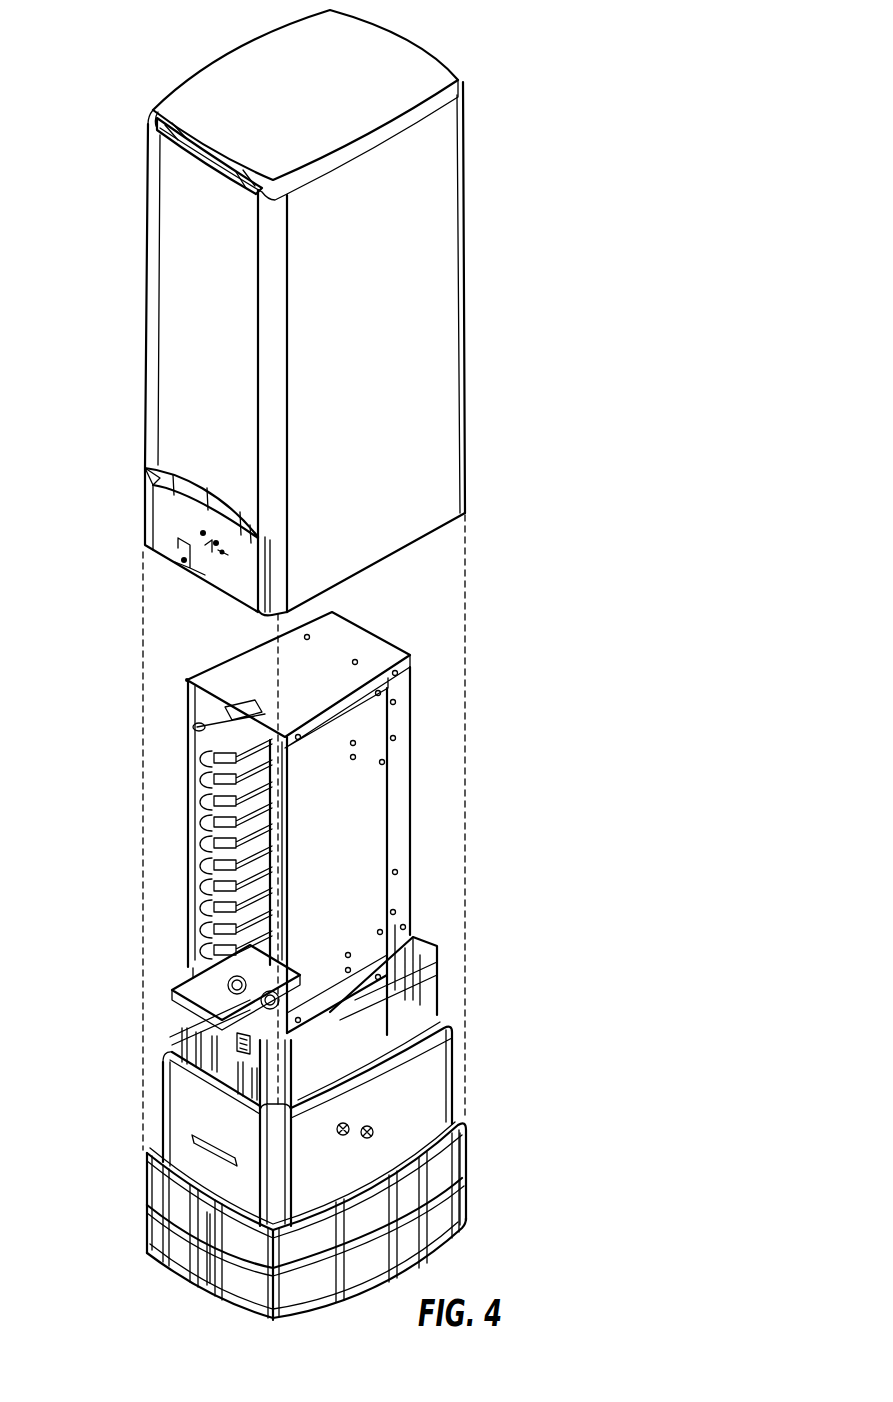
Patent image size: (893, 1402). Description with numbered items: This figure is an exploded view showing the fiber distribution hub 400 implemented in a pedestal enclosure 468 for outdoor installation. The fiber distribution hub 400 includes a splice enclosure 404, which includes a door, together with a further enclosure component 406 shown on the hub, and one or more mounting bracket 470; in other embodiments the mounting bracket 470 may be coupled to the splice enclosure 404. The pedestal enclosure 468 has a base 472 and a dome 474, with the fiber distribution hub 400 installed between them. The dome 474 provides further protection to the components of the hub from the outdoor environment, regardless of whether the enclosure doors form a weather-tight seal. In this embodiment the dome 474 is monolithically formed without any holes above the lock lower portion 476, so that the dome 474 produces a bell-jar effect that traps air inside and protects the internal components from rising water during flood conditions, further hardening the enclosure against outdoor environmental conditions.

The fiber distribution hub 400 is at (108, 597).
The splice enclosure 404 is at (250, 672).
The chassis top plate 406 is at (367, 643).
The pedestal enclosure 468 is at (415, 423).
The mounting bracket 470 is at (302, 1010).
The base 472 is at (180, 1100).
The dome 474 is at (407, 220).
The lock lower portion 476 is at (365, 570).